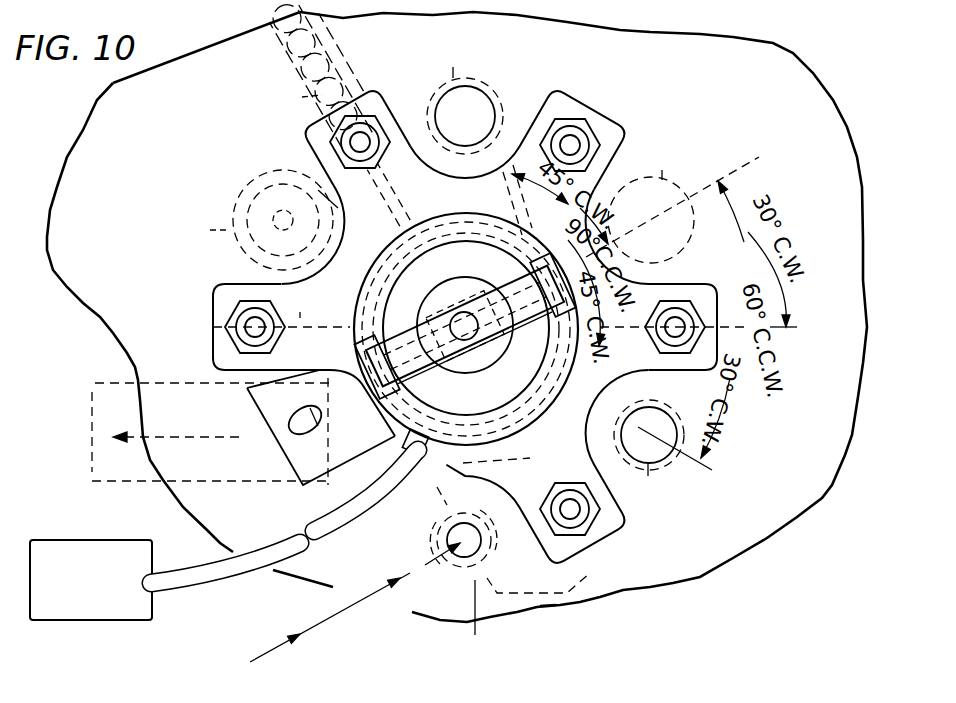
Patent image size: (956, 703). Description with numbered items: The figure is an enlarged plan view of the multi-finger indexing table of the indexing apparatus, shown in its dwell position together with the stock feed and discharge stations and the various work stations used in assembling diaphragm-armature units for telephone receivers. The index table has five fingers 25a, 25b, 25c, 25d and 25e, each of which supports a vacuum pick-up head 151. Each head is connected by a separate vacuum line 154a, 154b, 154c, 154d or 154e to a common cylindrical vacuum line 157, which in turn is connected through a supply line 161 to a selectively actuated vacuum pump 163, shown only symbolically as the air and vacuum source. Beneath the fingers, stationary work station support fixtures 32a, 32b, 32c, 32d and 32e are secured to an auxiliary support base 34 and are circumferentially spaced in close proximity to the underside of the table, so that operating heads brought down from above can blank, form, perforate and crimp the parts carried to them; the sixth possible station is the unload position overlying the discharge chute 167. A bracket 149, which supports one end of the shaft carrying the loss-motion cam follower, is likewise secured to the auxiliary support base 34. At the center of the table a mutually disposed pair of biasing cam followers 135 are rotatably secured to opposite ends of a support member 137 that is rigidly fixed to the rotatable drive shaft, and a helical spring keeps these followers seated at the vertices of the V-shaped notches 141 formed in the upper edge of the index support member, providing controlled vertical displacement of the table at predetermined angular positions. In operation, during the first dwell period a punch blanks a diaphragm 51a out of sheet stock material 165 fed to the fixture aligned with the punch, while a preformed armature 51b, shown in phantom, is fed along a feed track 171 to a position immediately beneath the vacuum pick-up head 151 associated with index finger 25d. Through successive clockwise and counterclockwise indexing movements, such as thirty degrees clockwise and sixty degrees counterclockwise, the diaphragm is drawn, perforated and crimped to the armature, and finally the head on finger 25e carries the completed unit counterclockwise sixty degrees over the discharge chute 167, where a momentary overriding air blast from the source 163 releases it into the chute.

The auxiliary support base 34 is at (797, 507).
The feed track 171 is at (238, 32).
The armature 51b is at (352, 52).
The index table finger 25a is at (603, 543).
The index table finger 25b is at (683, 268).
The index table finger 25c is at (610, 126).
The index table finger 25d is at (393, 118).
The index table finger 25e is at (217, 343).
The vacuum pick-up head 151 is at (577, 138).
The stationary work station support fixture 32a is at (446, 531).
The stationary work station support fixture 32b is at (618, 430).
The stationary work station support fixture 32c is at (683, 180).
The stationary work station support fixture 32d is at (492, 108).
The stationary work station support fixture 32e is at (273, 166).
The support member 137 is at (455, 305).
The biasing cam follower 135 is at (543, 275).
The V-shaped notch 141 is at (343, 352).
The vacuum line 154a is at (513, 525).
The vacuum line 154b is at (652, 300).
The vacuum line 154c is at (535, 202).
The vacuum line 154d is at (405, 216).
The vacuum line 154e is at (281, 308).
The common cylindrical vacuum line 157 is at (338, 208).
The discharge chute 167 is at (128, 382).
The bracket 149 is at (287, 443).
The vacuum pump 163 is at (110, 540).
The supply line 161 is at (283, 549).
The diaphragm 51a is at (369, 618).
The sheet stock material 165 is at (556, 594).